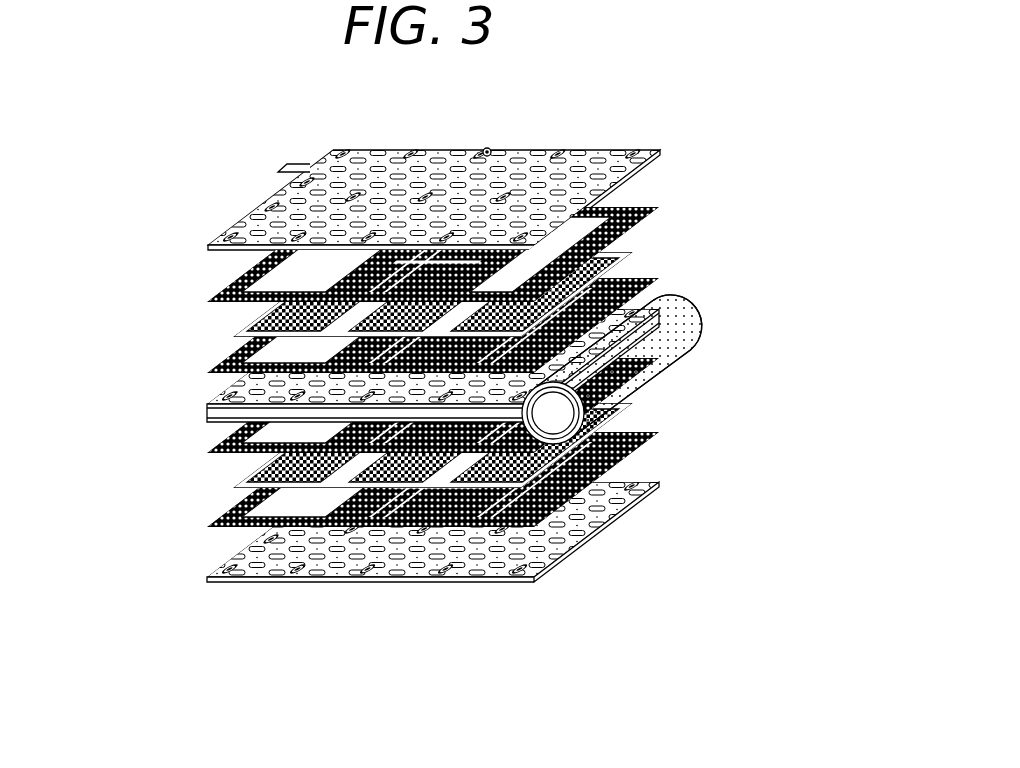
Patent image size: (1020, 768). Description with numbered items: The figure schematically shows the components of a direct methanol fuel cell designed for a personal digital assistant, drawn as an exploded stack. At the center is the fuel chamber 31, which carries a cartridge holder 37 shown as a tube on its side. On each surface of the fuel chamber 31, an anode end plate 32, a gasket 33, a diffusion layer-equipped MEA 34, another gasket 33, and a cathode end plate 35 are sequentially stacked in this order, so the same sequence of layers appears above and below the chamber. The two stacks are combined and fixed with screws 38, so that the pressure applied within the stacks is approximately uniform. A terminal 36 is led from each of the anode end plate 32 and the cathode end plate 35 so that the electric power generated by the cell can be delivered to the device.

The fuel chamber 31 is at (207, 413).
The anode end plate 32 is at (205, 404).
The gasket 33 is at (207, 370).
The diffusion layer-equipped MEA 34 is at (630, 252).
The cathode end plate 35 is at (662, 150).
The terminal 36 is at (290, 166).
The cartridge holder 37 is at (680, 310).
The screw 38 is at (490, 150).